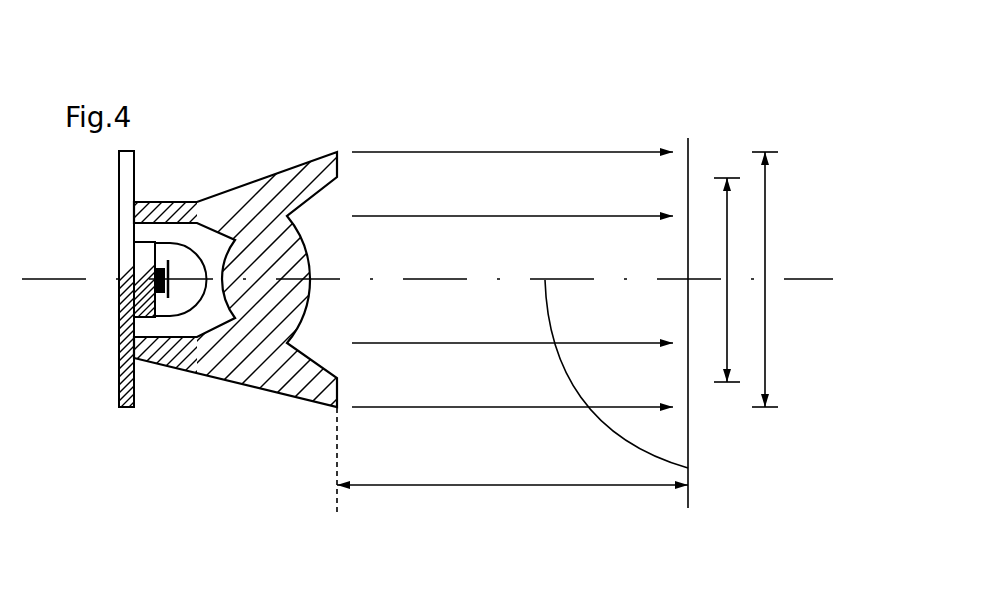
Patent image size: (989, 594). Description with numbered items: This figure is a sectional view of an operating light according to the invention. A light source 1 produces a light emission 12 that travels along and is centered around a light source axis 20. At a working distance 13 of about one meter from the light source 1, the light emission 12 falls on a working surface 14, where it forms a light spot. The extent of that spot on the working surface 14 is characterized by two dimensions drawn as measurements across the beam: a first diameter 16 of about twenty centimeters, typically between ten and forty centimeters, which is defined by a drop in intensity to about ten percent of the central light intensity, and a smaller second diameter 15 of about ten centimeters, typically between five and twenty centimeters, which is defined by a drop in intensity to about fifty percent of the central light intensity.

The light source 1 is at (228, 408).
The light emission 12 is at (472, 407).
The working distance 13 is at (585, 485).
The working surface 14 is at (690, 429).
The second diameter 15 is at (728, 359).
The first diameter 16 is at (767, 228).
The light source axis 20 is at (690, 470).